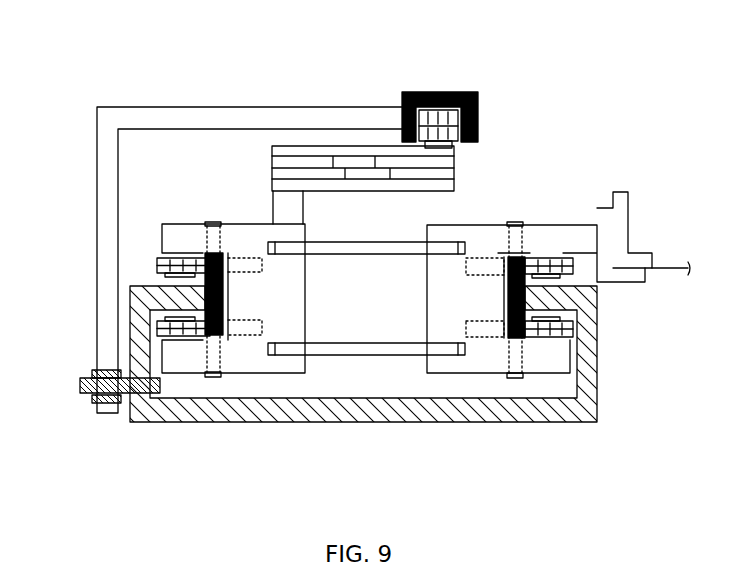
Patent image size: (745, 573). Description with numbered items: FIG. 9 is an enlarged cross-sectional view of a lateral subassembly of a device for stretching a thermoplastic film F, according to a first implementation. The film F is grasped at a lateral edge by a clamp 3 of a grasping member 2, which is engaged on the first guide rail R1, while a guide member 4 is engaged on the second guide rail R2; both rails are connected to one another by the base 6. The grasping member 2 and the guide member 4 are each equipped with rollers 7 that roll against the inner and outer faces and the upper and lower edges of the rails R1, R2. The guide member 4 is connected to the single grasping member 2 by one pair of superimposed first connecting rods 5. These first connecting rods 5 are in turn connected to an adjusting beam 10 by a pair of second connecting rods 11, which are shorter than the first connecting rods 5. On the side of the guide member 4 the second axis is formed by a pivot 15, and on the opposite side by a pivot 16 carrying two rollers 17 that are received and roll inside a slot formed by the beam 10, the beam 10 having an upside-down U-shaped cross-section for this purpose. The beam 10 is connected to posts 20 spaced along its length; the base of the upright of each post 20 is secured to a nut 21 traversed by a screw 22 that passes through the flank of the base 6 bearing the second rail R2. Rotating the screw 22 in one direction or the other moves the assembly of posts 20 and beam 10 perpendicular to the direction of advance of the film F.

The grasping member 2 is at (543, 226).
The clamp 3 is at (633, 240).
The guide member 4 is at (233, 224).
The first connecting rods 5 is at (408, 228).
The base 6 is at (550, 422).
The rollers 7 is at (157, 328).
The adjusting beam 10 is at (432, 92).
The second connecting rods 11 is at (368, 180).
The pivot 15 is at (272, 200).
The pivot 16 is at (412, 143).
The rollers 17 is at (458, 148).
The post 20 is at (95, 116).
The nut 21 is at (90, 370).
The screw 22 is at (90, 400).
The first guide rail R1 is at (507, 295).
The second guide rail R2 is at (225, 293).
The thermoplastic film F is at (674, 264).